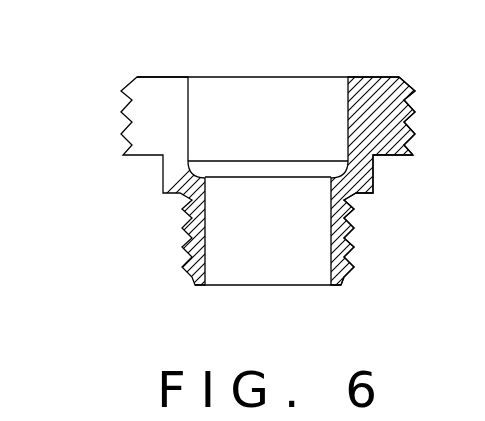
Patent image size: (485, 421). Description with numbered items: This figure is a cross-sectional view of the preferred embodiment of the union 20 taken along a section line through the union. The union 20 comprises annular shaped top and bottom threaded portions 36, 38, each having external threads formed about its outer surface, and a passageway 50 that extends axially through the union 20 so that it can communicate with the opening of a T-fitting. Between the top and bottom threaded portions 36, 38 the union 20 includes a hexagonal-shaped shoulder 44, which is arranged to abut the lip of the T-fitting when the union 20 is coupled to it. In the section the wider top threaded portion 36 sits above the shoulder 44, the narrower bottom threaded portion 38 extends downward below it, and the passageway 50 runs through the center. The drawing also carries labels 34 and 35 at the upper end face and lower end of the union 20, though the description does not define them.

The union 20 is at (146, 58).
The upper end face 34 is at (305, 77).
The top threaded portion 36 is at (418, 108).
The shoulder 44 is at (373, 177).
The bottom threaded portion 38 is at (356, 252).
The lower end 35 is at (293, 285).
The passageway 50 is at (312, 148).